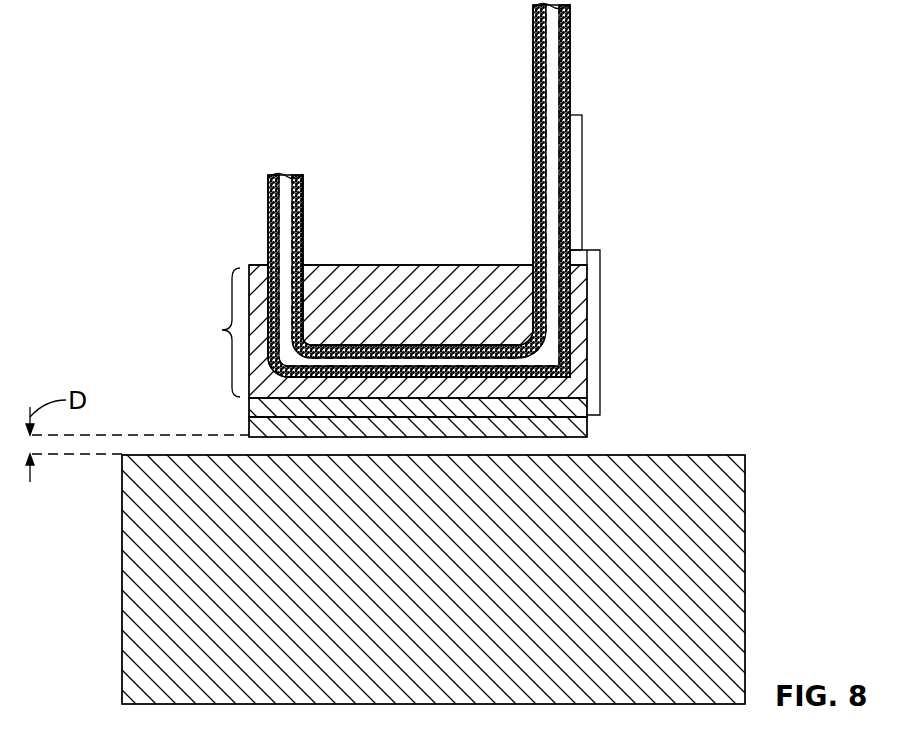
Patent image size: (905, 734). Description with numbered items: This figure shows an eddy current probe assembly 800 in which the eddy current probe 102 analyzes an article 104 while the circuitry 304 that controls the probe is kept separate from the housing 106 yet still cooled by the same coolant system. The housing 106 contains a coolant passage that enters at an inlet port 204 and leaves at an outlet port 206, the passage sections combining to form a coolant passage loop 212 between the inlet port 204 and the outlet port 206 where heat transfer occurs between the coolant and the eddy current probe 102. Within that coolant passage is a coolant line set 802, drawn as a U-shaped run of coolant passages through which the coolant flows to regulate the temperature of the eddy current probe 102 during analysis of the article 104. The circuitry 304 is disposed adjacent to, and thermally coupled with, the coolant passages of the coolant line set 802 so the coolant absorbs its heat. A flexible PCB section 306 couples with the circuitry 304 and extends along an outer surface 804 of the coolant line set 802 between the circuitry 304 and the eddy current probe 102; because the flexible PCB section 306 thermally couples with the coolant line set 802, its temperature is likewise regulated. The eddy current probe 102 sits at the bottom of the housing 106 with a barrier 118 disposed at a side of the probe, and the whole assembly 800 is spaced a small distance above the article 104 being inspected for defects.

The eddy current probe assembly 800 is at (163, 78).
The circuitry 304 is at (548, 75).
The flexible PCB section 306 is at (578, 115).
The outer surface 804 is at (568, 142).
The coolant line set 802 is at (565, 183).
The inlet port 204 is at (582, 252).
The barrier 118 is at (268, 200).
The outlet port 206 is at (258, 265).
The coolant passage loop 212 is at (208, 332).
The housing 106 is at (578, 344).
The eddy current probe 102 is at (577, 407).
The article 104 is at (724, 568).